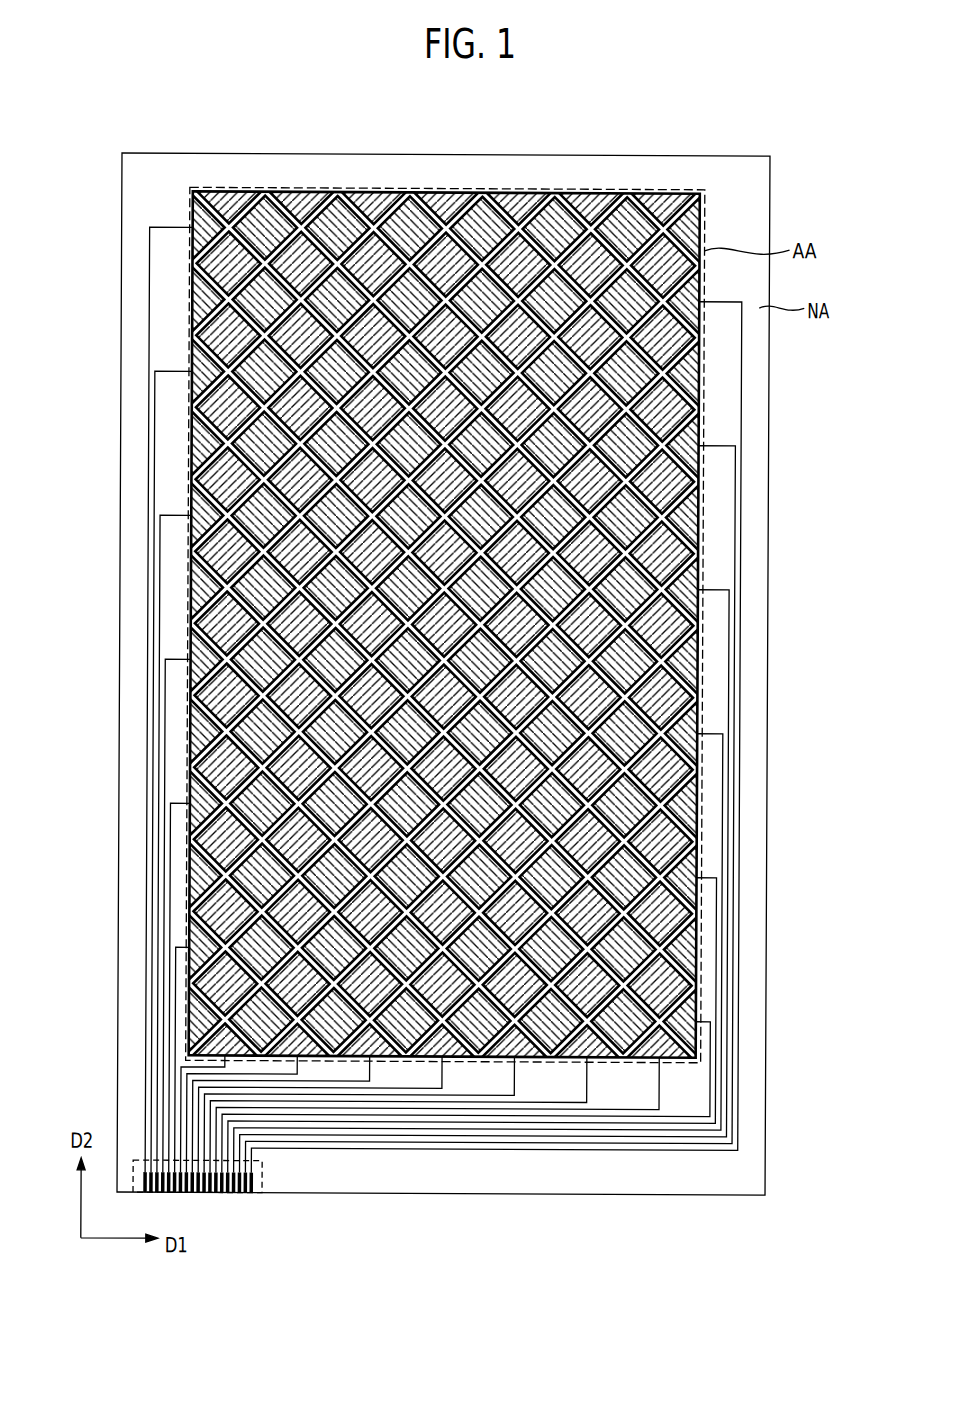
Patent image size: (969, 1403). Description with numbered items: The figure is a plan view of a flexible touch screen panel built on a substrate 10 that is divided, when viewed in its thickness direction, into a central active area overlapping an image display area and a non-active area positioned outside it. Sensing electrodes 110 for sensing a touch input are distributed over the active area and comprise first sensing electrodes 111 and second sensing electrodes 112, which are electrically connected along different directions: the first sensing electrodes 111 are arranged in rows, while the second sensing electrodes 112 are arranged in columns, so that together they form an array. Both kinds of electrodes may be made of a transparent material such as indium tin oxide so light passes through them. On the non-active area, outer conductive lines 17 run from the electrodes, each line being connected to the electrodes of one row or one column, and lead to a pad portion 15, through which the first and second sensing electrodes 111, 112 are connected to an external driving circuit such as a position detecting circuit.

The substrate 10 is at (584, 153).
The sensing electrodes 110 is at (445, 574).
The first sensing electrodes 111 is at (265, 212).
The second sensing electrodes 112 is at (227, 247).
The pad portion 15 is at (267, 1178).
The outer conductive lines 17 is at (149, 273).